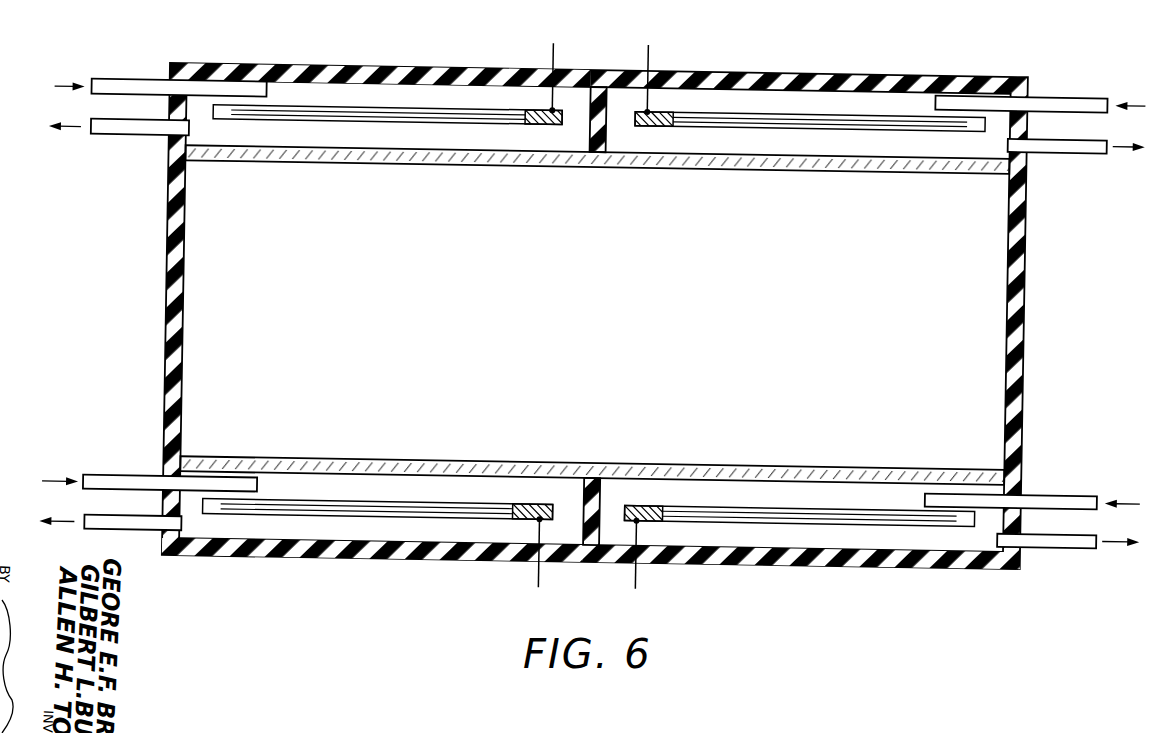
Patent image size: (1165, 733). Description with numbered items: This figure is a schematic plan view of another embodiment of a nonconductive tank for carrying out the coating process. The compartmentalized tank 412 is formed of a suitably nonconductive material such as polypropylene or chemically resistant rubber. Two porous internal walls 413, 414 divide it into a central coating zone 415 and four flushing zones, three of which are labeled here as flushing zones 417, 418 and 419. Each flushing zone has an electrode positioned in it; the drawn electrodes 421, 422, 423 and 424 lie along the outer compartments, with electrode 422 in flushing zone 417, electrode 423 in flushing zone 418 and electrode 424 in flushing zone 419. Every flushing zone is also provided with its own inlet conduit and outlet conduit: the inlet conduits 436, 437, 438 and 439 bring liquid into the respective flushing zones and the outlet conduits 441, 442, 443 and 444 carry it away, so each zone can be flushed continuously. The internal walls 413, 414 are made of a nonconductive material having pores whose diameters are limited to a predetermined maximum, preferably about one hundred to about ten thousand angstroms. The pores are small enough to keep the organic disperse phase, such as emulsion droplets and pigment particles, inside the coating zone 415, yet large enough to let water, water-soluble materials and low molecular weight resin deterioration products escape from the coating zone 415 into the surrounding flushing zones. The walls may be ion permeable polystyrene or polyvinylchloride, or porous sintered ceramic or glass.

The compartmentalized tank 412 is at (861, 248).
The porous internal wall 413 is at (597, 181).
The porous internal wall 414 is at (537, 395).
The central coating zone 415 is at (575, 291).
The flushing zone 417 is at (173, 66).
The flushing zone 418 is at (626, 465).
The flushing zone 419 is at (372, 568).
The electrode 421 is at (810, 88).
The electrode 422 is at (233, 45).
The electrode 423 is at (799, 538).
The electrode 424 is at (377, 530).
The inlet conduit 436 is at (1040, 83).
The inlet conduit 437 is at (160, 65).
The inlet conduit 438 is at (1033, 481).
The inlet conduit 439 is at (150, 455).
The outlet conduit 441 is at (1076, 166).
The outlet conduit 442 is at (118, 147).
The outlet conduit 443 is at (1067, 566).
The outlet conduit 444 is at (122, 552).